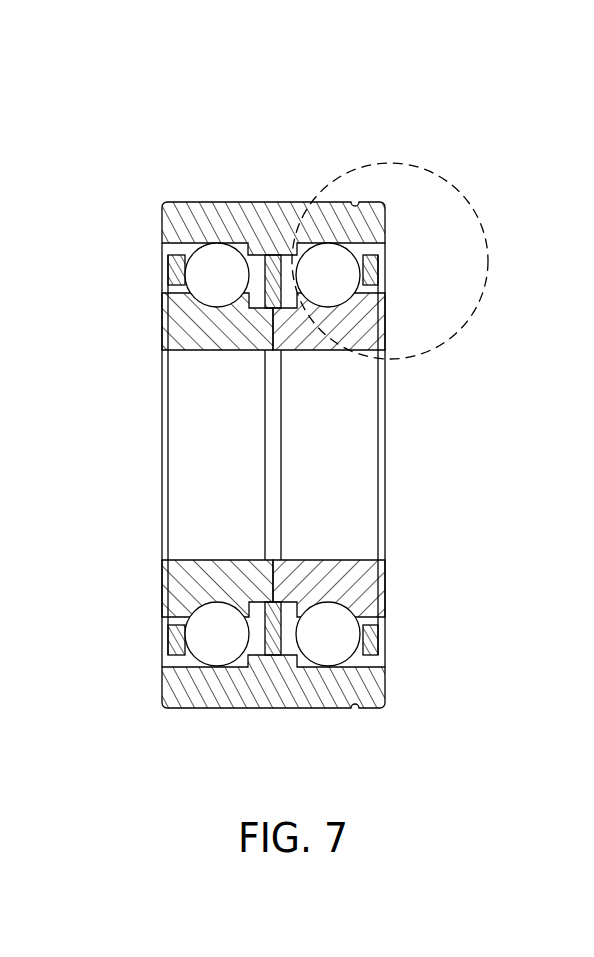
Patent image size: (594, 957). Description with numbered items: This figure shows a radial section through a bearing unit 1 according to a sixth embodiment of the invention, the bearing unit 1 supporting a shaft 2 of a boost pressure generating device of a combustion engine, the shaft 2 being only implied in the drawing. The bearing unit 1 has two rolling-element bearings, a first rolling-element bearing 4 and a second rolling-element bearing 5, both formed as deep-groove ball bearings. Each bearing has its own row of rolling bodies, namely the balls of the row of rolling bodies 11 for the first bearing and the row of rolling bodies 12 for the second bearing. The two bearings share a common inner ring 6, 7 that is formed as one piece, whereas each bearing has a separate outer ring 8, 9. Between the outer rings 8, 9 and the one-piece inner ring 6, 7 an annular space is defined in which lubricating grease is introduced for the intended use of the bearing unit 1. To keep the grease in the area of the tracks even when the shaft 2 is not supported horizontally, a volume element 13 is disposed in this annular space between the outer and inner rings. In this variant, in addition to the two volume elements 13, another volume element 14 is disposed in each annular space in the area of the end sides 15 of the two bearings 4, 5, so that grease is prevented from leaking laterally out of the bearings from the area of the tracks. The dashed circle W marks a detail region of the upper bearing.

The bearing unit 1 is at (268, 142).
The shaft 2 is at (222, 394).
The first rolling-element bearing 4 is at (208, 192).
The second rolling-element bearing 5 is at (337, 192).
The inner ring 6 is at (208, 340).
The inner ring 7 is at (308, 312).
The outer ring 8 is at (329, 164).
The outer ring 9 is at (288, 236).
The row of rolling bodies 11 is at (215, 647).
The row of rolling bodies 12 is at (330, 647).
The volume element 13 is at (283, 638).
The volume element 14 is at (180, 650).
The end sides 15 is at (150, 593).
The detail region W is at (478, 183).